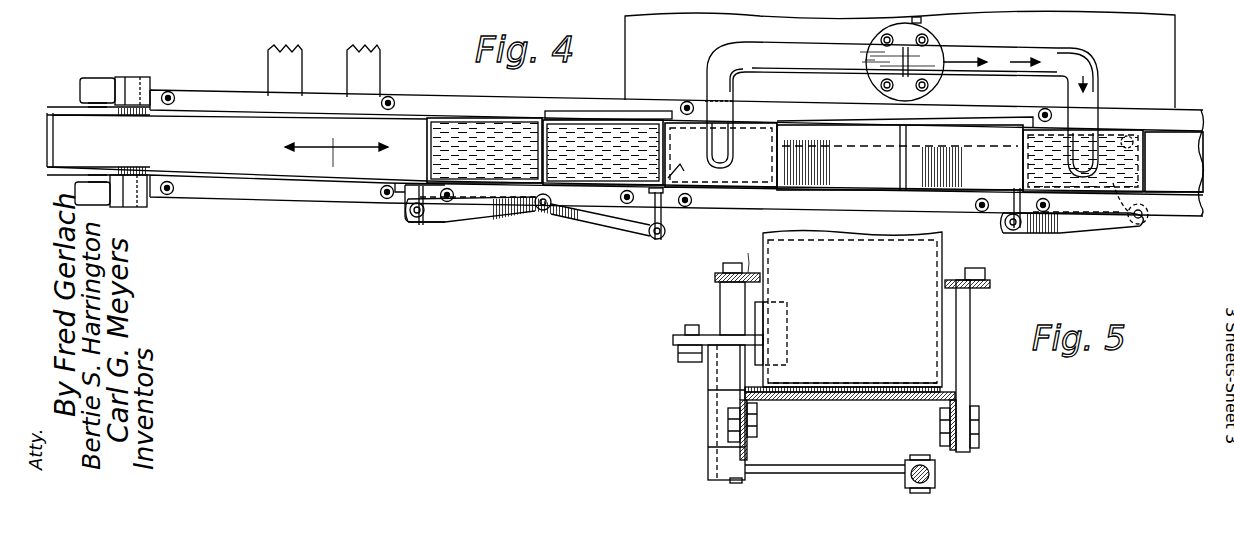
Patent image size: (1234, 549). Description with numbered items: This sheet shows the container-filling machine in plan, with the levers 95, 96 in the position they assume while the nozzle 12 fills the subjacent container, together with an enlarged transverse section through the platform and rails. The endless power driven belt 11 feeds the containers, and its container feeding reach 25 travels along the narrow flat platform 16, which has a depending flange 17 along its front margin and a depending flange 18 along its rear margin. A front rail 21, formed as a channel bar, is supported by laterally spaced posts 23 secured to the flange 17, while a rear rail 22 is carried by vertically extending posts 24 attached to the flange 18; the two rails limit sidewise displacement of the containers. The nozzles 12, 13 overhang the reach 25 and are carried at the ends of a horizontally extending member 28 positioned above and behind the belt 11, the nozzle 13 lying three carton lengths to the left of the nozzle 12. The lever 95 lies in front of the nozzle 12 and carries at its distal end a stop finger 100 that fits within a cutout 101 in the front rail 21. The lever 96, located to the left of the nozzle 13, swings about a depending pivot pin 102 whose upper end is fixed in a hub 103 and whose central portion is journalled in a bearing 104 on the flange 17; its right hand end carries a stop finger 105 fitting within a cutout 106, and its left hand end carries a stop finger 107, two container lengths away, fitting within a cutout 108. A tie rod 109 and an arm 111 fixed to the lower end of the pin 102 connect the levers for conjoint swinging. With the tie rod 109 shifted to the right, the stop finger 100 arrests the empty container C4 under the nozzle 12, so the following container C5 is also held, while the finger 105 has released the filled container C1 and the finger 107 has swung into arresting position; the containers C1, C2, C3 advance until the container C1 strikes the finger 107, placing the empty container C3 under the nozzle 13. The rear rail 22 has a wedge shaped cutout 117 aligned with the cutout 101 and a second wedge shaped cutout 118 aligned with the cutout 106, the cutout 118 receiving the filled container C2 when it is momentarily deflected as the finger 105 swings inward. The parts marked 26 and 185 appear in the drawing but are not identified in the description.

In FIG. 4, the endless power driven belt 11 is at (258, 165).
In FIG. 5, the endless power driven belt 11 is at (828, 387).
In FIG. 4, the nozzle 12 is at (1082, 134).
In FIG. 4, the nozzle 13 is at (736, 162).
In FIG. 5, the platform 16 is at (867, 401).
In FIG. 5, the depending flange 17 is at (748, 443).
In FIG. 5, the depending flange 18 is at (945, 426).
In FIG. 4, the front rail 21 is at (317, 198).
In FIG. 5, the front rail 21 is at (716, 289).
In FIG. 4, the rear rail 22 is at (210, 96).
In FIG. 5, the rear rail 22 is at (990, 289).
In FIG. 4, the posts 23 is at (389, 186).
In FIG. 5, the posts 23 is at (727, 311).
In FIG. 4, the posts 24 is at (396, 97).
In FIG. 5, the posts 24 is at (971, 324).
In FIG. 5, the reach 25 is at (885, 387).
In FIG. 4, the end clamp blocks 26 is at (53, 111).
In FIG. 4, the horizontally extending member 28 is at (803, 50).
In FIG. 4, the lever 95 is at (1082, 222).
In FIG. 4, the lever 96 is at (607, 224).
In FIG. 4, the stop finger 100 is at (1003, 225).
In FIG. 4, the cutout 101 is at (1008, 196).
In FIG. 4, the pivot pin 102 is at (542, 208).
In FIG. 5, the pivot pin 102 is at (708, 375).
In FIG. 4, the hub 103 is at (545, 212).
In FIG. 5, the bearing 104 is at (707, 419).
In FIG. 4, the stop finger 105 is at (663, 214).
In FIG. 4, the cutout 106 is at (680, 177).
In FIG. 4, the stop finger 107 is at (405, 206).
In FIG. 4, the cutout 108 is at (395, 193).
In FIG. 5, the tie rod 109 is at (937, 474).
In FIG. 5, the arm 111 is at (833, 466).
In FIG. 4, the wedge shaped cutout 117 is at (993, 118).
In FIG. 4, the wedge shaped cutout 118 is at (635, 111).
In FIG. 4, the housing 185 is at (900, 54).
In FIG. 4, the container C1 is at (497, 118).
In FIG. 5, the container C1 is at (848, 309).
In FIG. 4, the container C2 is at (582, 120).
In FIG. 4, the container C3 is at (762, 120).
In FIG. 4, the container C4 is at (1128, 131).
In FIG. 4, the container C5 is at (1178, 130).